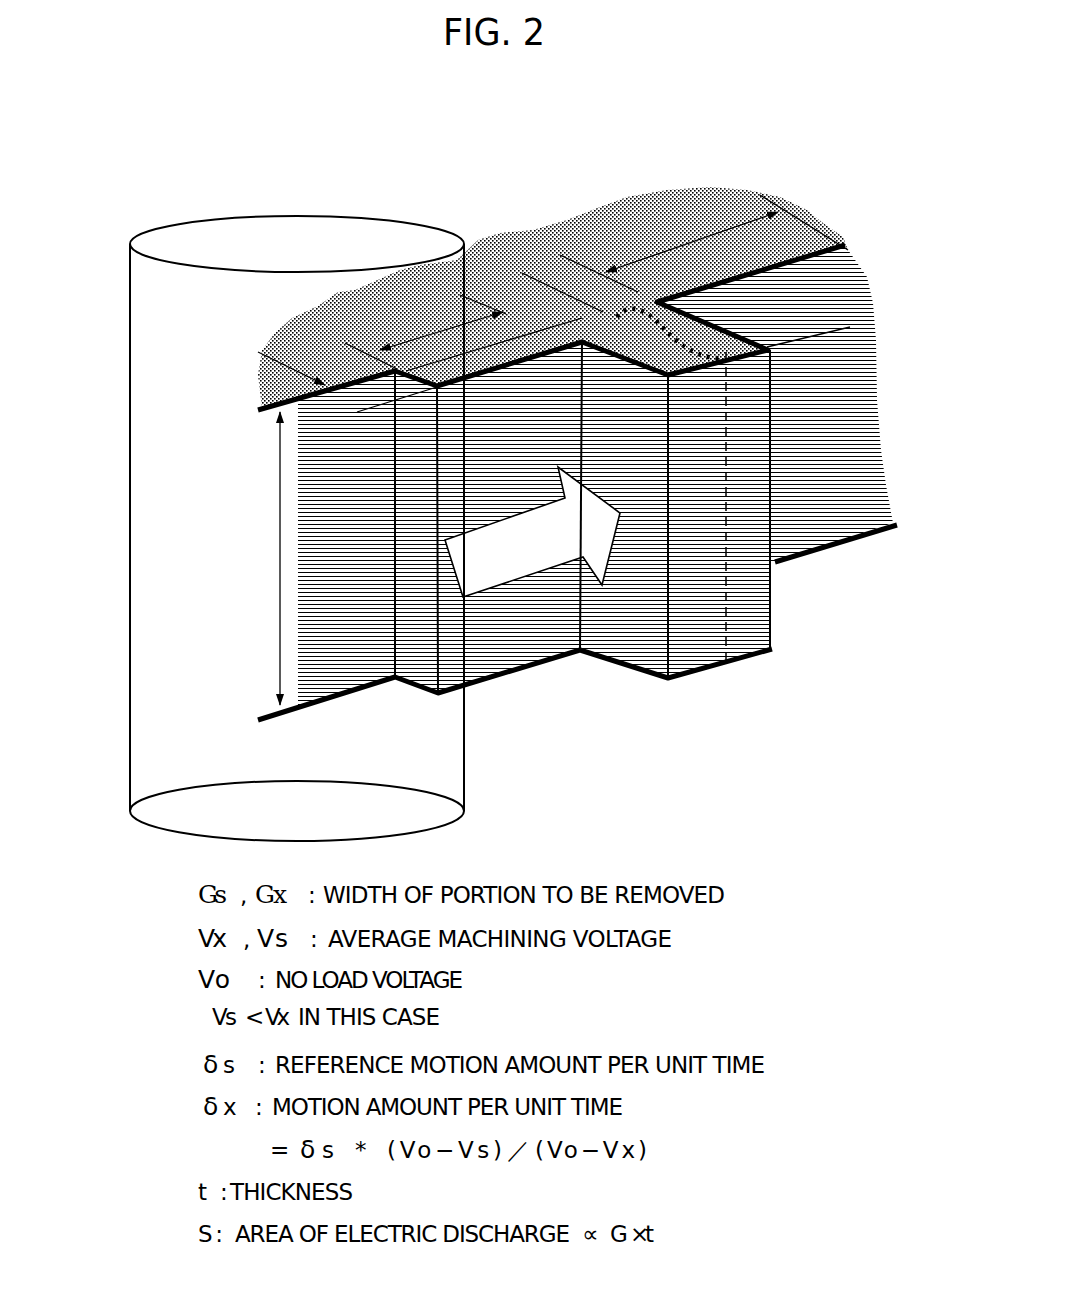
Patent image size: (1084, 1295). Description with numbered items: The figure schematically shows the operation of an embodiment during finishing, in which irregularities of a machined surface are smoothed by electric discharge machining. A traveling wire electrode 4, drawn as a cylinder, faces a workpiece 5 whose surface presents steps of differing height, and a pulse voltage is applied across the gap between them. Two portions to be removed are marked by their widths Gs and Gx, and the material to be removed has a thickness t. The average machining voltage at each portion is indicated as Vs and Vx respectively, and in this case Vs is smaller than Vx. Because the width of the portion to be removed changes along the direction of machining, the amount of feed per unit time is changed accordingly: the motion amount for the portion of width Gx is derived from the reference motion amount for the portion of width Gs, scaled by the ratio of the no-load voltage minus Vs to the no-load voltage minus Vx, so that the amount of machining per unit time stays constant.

The wire electrode 4 is at (130, 275).
The workpiece 5 is at (818, 233).
The width of portion to be removed Gx is at (450, 447).
The width of portion to be removed Gs is at (838, 323).
The average machining voltage Vx is at (543, 496).
The average machining voltage Vs is at (683, 526).
The thickness t is at (263, 558).